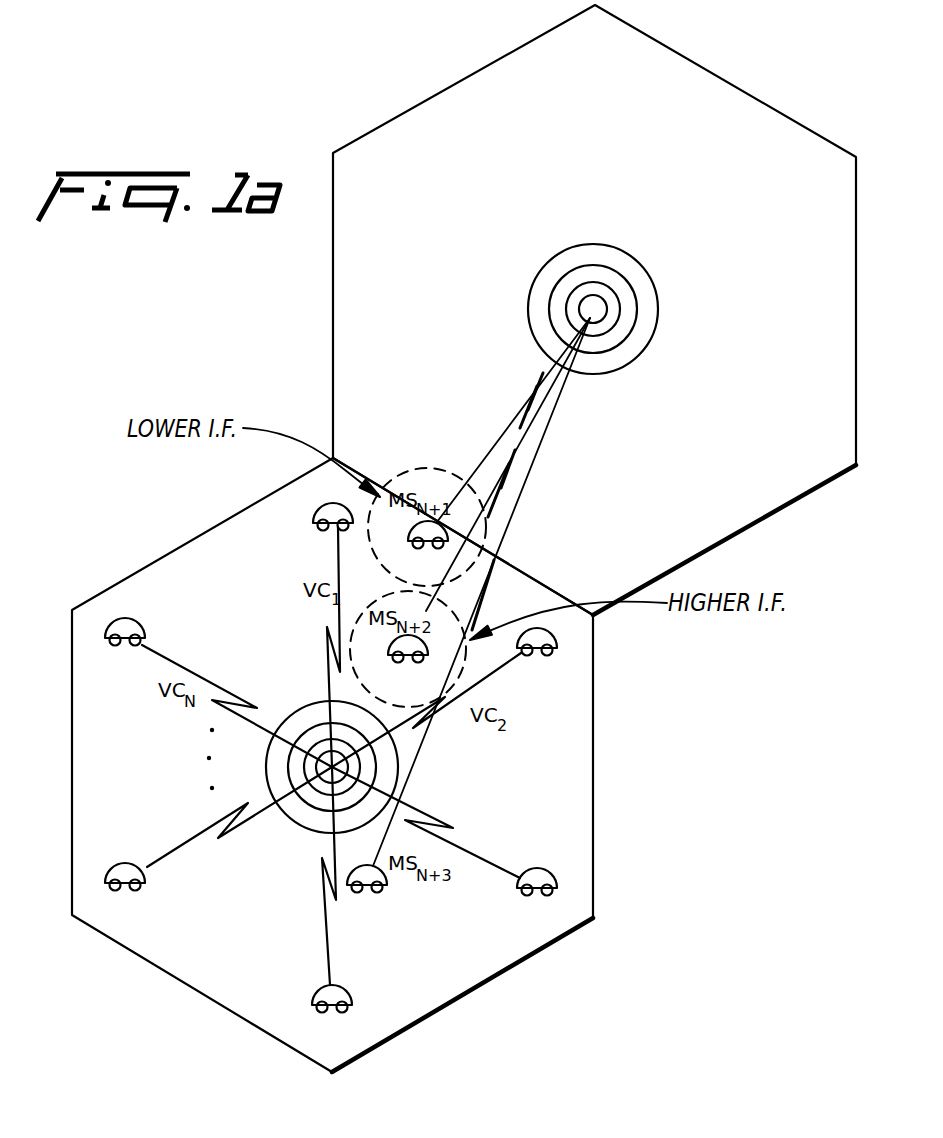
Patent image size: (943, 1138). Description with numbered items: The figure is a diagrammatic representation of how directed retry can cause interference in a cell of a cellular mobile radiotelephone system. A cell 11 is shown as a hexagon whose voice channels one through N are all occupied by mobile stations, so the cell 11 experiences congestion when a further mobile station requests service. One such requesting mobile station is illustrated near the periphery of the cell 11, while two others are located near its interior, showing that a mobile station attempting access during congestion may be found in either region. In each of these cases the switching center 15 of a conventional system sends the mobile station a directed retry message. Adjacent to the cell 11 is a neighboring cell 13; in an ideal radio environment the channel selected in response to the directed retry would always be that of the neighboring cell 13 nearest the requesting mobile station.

The cell 11 is at (70, 765).
The neighboring cell 13 is at (727, 83).
The switching center 15 is at (328, 773).